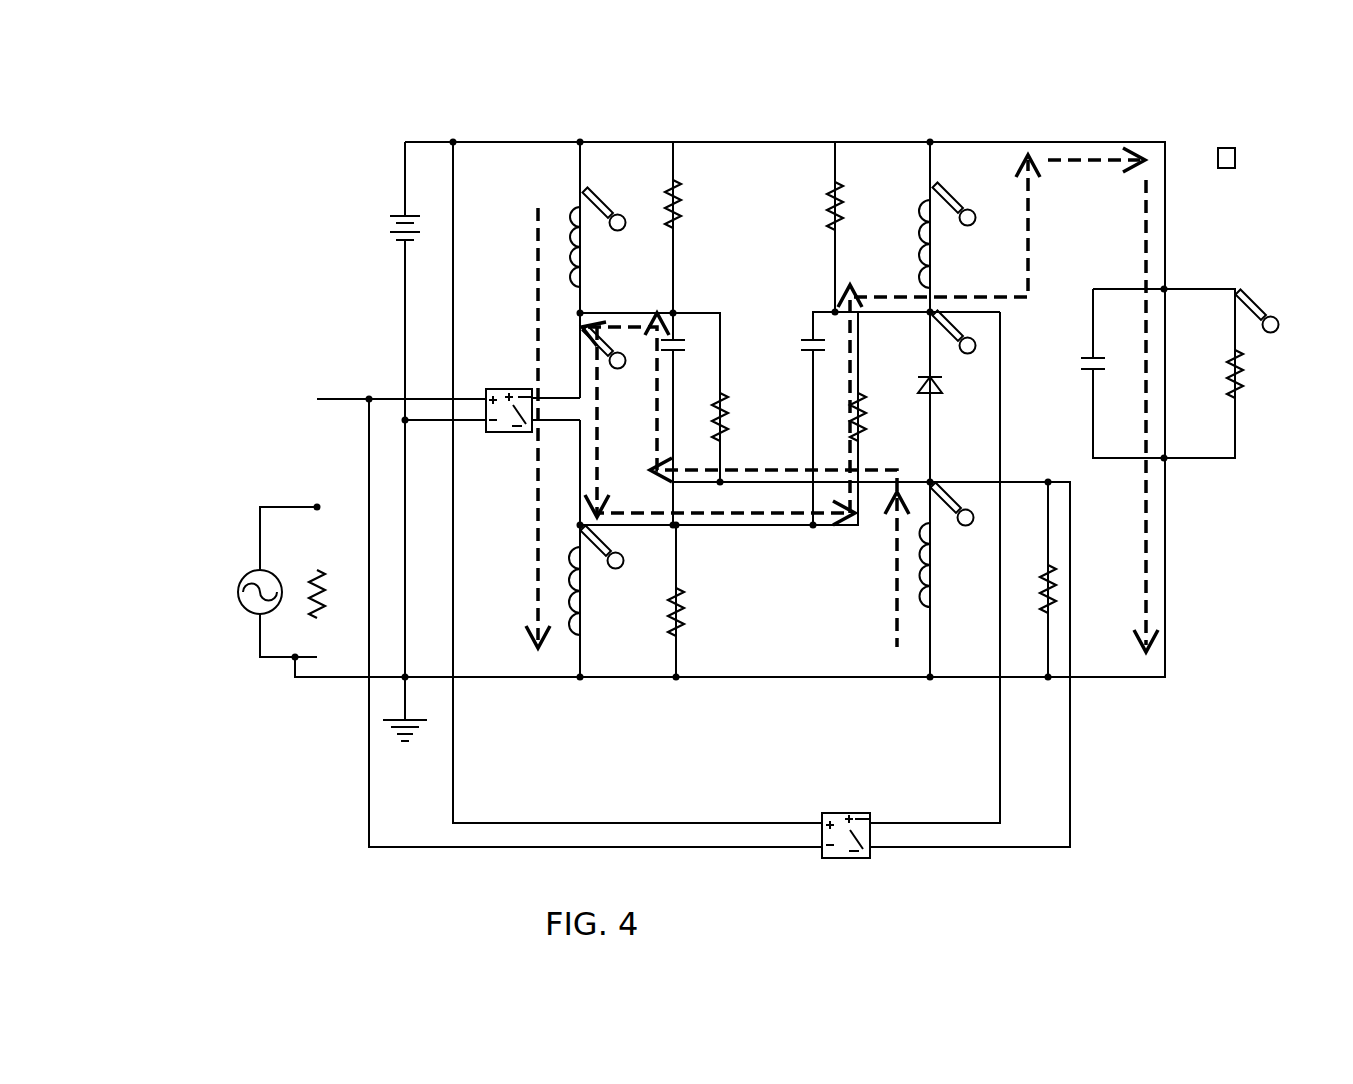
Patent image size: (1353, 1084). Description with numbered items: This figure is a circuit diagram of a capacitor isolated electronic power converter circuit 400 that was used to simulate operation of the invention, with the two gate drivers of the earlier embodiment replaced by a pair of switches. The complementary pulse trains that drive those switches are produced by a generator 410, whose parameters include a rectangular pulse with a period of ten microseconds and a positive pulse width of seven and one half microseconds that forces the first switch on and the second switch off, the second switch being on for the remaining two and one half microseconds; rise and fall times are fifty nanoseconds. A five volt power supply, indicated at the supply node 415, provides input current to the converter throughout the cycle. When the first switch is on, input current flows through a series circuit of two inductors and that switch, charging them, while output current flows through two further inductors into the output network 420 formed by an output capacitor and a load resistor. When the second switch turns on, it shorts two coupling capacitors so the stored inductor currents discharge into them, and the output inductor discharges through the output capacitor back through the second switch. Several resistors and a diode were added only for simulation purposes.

The capacitor isolated electronic power converter circuit 400 is at (778, 126).
The generator 410 is at (284, 505).
The DC supply node 415 is at (453, 133).
The output load 420 is at (1182, 283).